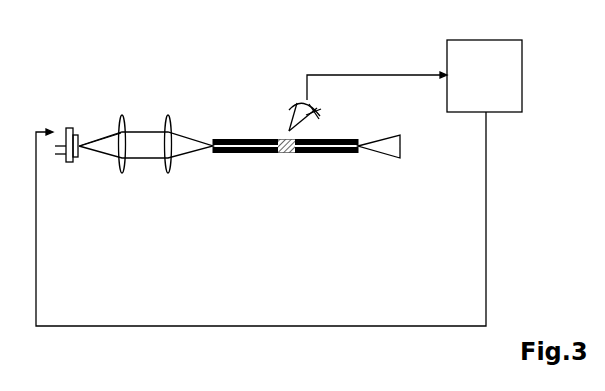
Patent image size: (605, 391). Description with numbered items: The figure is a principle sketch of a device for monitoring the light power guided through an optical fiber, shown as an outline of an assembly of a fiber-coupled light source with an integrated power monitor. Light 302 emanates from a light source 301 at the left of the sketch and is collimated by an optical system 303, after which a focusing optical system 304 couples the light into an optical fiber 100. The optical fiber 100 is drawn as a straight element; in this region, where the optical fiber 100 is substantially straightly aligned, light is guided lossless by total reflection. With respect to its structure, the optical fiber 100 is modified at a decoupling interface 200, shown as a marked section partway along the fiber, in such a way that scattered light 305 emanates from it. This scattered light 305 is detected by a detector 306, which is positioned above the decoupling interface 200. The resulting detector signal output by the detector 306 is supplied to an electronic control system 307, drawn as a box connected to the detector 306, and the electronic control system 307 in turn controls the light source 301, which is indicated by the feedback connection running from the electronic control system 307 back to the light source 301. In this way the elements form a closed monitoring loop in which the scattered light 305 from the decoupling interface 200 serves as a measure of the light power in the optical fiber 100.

The light source 301 is at (68, 128).
The light 302 is at (107, 143).
The optical system 303 is at (123, 172).
The focusing optical system 304 is at (171, 172).
The optical fiber 100 is at (215, 140).
The decoupling interface 200 is at (289, 153).
The scattered light 305 is at (284, 132).
The detector 306 is at (298, 103).
The electronic control system 307 is at (504, 89).